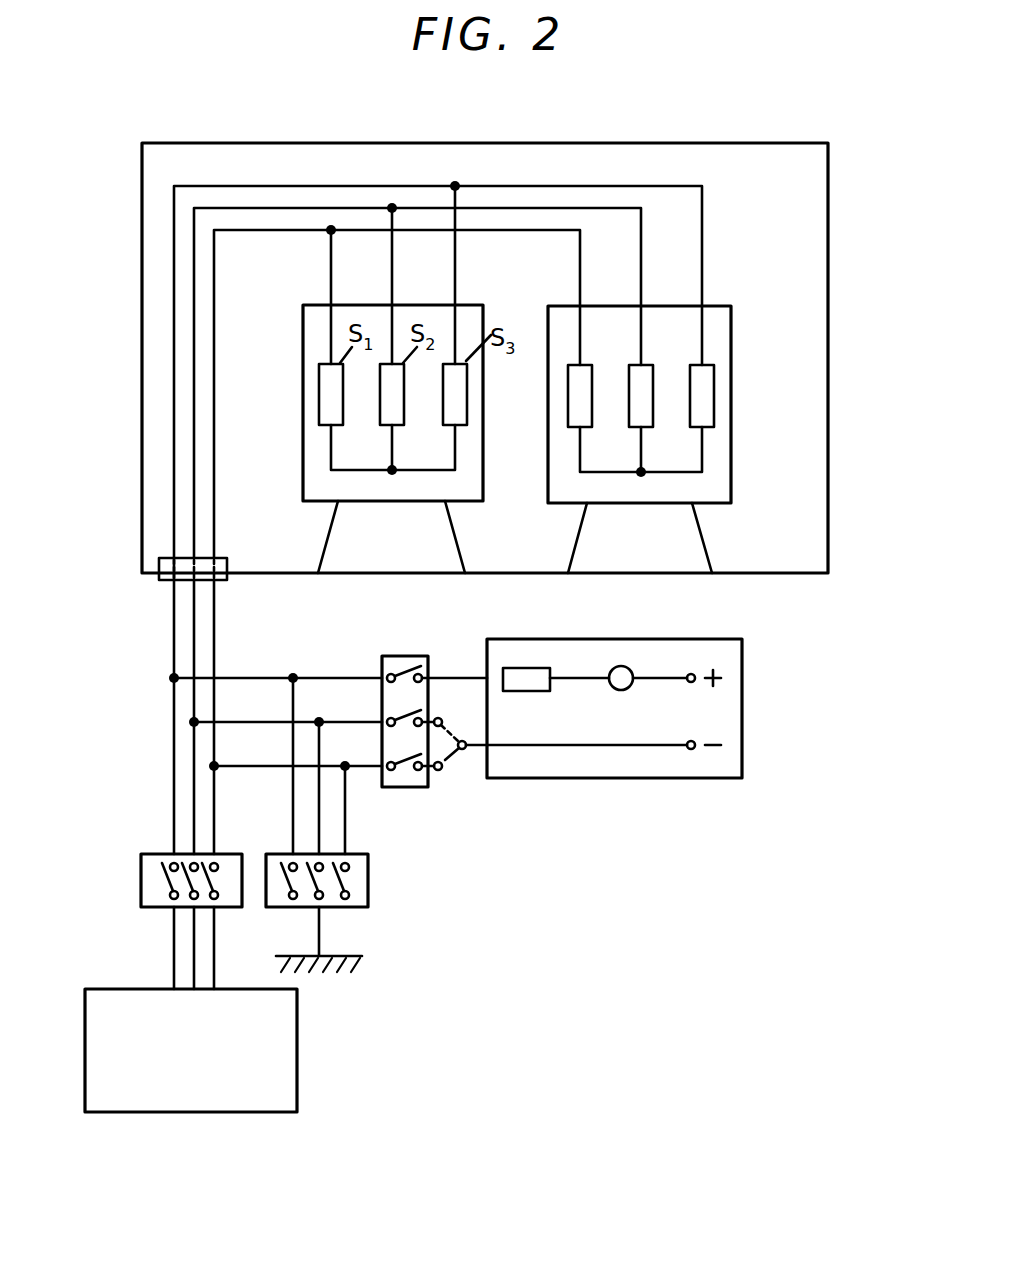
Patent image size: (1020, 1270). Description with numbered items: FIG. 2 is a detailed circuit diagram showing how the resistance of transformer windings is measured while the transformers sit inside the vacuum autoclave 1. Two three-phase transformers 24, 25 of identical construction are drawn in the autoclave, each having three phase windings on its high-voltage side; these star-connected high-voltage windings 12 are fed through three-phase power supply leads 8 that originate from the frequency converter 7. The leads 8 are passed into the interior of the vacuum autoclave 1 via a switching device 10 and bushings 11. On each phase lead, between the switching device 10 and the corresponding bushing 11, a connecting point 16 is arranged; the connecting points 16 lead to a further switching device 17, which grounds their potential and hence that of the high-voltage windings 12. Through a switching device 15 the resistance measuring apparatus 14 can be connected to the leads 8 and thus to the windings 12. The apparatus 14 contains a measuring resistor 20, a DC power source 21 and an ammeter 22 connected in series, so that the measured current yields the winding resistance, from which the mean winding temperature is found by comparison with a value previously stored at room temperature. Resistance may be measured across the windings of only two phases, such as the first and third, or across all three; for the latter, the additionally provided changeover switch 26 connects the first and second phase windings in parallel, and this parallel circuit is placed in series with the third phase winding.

The vacuum autoclave 1 is at (828, 338).
The frequency converter 7 is at (297, 1050).
The three-phase power supply leads 8 is at (212, 827).
The switching device 10 is at (141, 880).
The bushings 11 is at (159, 578).
The high-voltage windings 12 is at (328, 363).
The resistance measuring apparatus 14 is at (742, 766).
The switching device 15 is at (407, 787).
The connecting points 16 is at (214, 766).
The further switching device 17 is at (368, 880).
The measuring resistor 20 is at (523, 668).
The DC power source 21 is at (693, 698).
The ammeter 22 is at (621, 666).
The three-phase transformer 24 is at (310, 479).
The three-phase transformer 25 is at (720, 483).
The changeover switch 26 is at (448, 760).